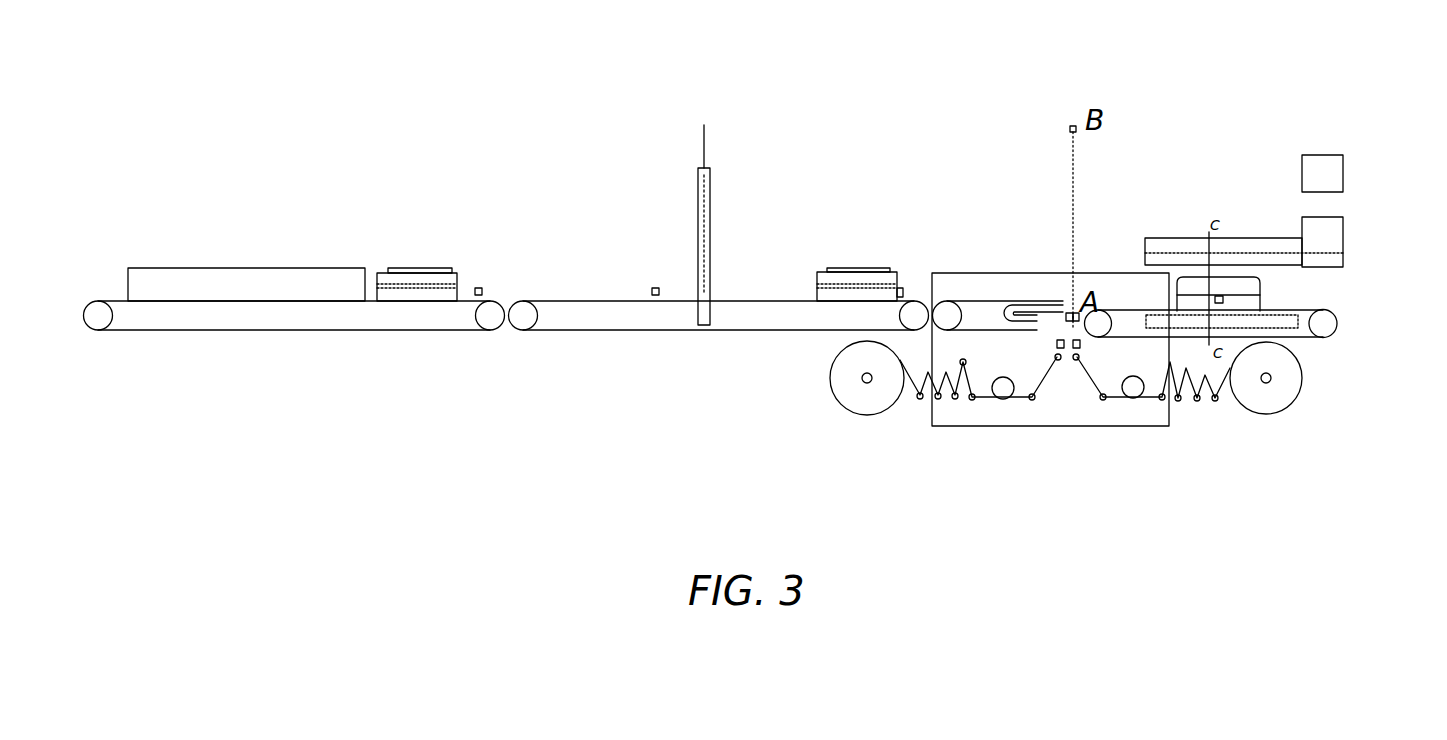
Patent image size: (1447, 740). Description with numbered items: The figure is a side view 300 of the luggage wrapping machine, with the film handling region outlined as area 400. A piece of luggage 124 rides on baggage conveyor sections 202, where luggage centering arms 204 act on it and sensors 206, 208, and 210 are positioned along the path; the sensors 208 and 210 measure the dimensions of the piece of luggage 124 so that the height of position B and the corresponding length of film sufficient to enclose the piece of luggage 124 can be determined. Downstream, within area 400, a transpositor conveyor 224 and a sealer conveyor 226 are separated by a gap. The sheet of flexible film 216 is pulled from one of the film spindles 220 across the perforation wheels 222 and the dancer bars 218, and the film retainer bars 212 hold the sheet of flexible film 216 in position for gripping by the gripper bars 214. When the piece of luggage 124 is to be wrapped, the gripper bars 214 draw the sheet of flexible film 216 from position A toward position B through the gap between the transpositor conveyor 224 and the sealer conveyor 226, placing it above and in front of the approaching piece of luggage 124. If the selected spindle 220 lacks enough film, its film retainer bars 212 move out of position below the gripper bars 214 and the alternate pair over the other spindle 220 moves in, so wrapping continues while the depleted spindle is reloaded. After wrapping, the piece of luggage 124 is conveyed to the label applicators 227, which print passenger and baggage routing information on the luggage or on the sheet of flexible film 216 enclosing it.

The side view 300 is at (204, 86).
The baggage conveyor sections 202 is at (205, 330).
The luggage centering arms 204 is at (232, 265).
The piece of luggage 124 is at (398, 268).
The sensor 206 is at (490, 288).
The sensor 208 is at (653, 288).
The sensor 210 is at (698, 178).
The film spindles 220 is at (847, 345).
The packaging station 400 is at (1160, 301).
The transpositor conveyor 224 is at (960, 298).
The gripper bars 214 is at (1068, 314).
The perforation wheels 222 is at (1000, 377).
The dancer bars 218 is at (965, 366).
The film retainer bars 212 is at (1062, 348).
The sheet of flexible film 216 is at (1158, 398).
The sealer conveyor 226 is at (1335, 335).
The label applicators 227 is at (1345, 162).